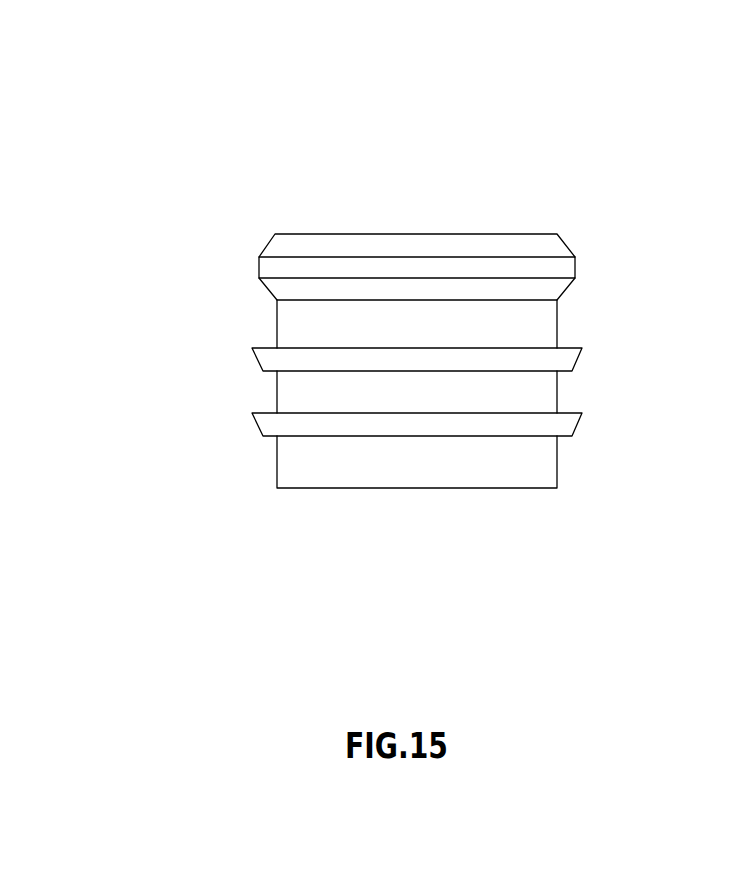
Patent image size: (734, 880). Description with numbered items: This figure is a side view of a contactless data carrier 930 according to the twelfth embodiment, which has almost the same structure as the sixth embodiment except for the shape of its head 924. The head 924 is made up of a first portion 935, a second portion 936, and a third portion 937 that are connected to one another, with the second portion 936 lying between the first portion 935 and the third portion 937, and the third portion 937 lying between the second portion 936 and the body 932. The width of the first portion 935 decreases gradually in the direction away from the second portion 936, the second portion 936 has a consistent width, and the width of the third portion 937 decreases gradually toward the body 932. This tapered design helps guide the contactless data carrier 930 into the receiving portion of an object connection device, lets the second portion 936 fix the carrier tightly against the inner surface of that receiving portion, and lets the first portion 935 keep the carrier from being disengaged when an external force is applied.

The contactless data carrier 930 is at (272, 183).
The head portion 924 is at (662, 215).
The first portion 935 is at (552, 252).
The second portion 936 is at (551, 268).
The third portion 937 is at (540, 290).
The body 932 is at (517, 333).